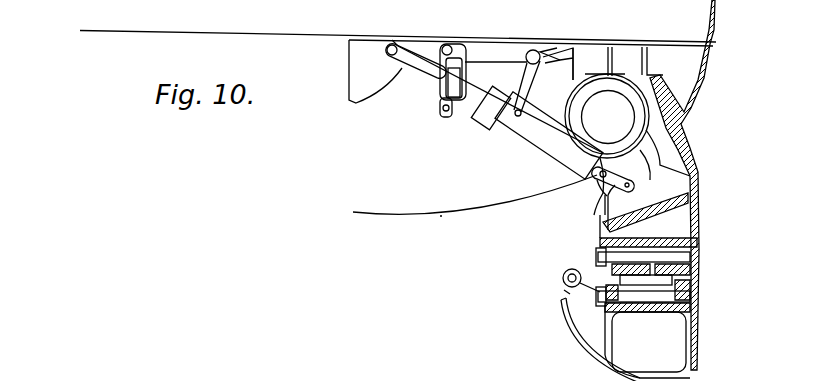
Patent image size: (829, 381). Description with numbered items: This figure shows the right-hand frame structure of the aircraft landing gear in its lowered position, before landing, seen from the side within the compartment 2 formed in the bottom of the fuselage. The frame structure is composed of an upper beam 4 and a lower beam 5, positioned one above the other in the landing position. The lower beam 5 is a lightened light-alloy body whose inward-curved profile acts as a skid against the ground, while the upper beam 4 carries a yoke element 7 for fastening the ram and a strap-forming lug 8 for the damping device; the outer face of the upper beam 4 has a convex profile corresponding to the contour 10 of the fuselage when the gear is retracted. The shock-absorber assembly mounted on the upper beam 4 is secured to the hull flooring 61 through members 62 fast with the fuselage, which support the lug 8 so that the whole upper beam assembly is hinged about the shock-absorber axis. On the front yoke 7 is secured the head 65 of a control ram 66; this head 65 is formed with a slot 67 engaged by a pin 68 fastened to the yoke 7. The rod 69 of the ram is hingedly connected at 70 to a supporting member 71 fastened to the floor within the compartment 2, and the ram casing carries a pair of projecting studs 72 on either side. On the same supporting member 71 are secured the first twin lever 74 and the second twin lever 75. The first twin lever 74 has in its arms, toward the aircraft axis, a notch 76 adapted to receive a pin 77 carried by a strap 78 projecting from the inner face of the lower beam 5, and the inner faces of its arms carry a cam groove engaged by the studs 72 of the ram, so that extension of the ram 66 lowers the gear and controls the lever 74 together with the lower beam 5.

The hull flooring 61 is at (238, 31).
The supporting member 71 is at (362, 55).
The hinge connection 70 is at (394, 40).
The rod 69 is at (402, 66).
The first twin lever 74 is at (412, 64).
The notch 76 is at (455, 109).
The second twin lever 75 is at (525, 80).
The projecting studs 72 is at (517, 118).
The control ram 66 is at (532, 138).
The strap-forming lug 8 is at (592, 90).
The members fast with the fuselage 62 is at (628, 57).
The head 65 is at (613, 173).
The slot 67 is at (633, 186).
The pin 68 is at (598, 182).
The yoke element 7 is at (678, 176).
The upper beam 4 is at (699, 218).
The lower beam 5 is at (682, 343).
The pin 77 is at (563, 275).
The strap 78 is at (567, 300).
The compartment 2 is at (422, 200).
The contour of the fuselage 10 is at (462, 217).